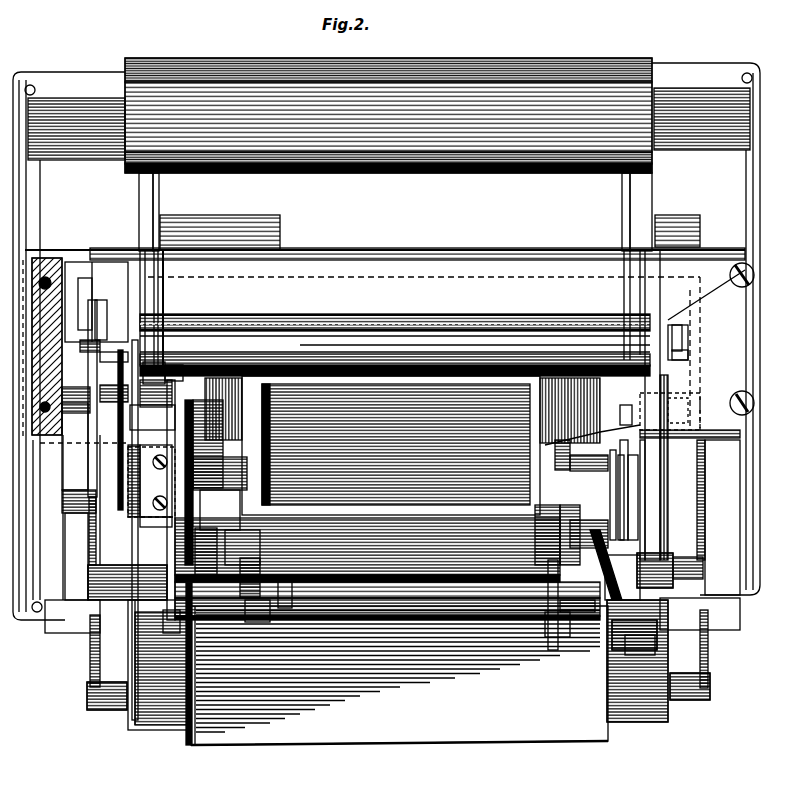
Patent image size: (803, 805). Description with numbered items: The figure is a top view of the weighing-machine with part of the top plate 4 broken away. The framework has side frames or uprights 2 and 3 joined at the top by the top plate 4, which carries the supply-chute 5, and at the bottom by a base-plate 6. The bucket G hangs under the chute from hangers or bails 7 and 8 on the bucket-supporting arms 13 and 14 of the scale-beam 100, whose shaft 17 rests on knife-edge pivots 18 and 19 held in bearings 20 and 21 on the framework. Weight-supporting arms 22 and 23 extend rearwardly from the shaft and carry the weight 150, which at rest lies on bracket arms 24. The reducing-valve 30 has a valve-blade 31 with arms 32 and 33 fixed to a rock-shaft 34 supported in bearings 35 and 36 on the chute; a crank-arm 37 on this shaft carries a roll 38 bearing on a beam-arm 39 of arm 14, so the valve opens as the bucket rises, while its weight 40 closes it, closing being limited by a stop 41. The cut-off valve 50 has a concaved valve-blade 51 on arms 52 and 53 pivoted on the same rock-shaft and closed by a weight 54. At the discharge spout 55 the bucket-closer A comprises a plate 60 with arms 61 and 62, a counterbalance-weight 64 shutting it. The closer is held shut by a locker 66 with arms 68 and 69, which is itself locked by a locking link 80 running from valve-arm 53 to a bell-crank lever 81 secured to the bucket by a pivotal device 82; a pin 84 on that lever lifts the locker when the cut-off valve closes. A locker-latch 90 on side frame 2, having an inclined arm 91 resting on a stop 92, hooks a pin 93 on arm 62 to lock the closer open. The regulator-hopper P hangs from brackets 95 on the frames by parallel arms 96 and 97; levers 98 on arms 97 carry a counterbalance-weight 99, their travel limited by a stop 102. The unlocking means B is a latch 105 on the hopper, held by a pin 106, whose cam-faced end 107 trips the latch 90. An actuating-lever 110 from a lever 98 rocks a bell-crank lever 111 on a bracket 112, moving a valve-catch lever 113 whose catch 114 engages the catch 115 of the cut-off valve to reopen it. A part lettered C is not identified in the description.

The side frame 2 is at (52, 440).
The side frame 3 is at (762, 447).
The top plate 4 is at (488, 256).
The supply-chute 5 is at (500, 366).
The base-plate 6 is at (705, 74).
The hanger 7 is at (625, 566).
The hanger 8 is at (152, 614).
The bucket-supporting arm 13 is at (652, 518).
The bucket-supporting arm 14 is at (132, 536).
The shaft 17 is at (521, 314).
The pivot 18 is at (104, 318).
The pivot 19 is at (676, 344).
The bearing 20 is at (112, 360).
The bearing 21 is at (682, 356).
The weight-supporting arm 22 is at (153, 204).
The weight-supporting arm 23 is at (655, 212).
The bracket arm 24 is at (172, 234).
The reducing-valve 30 is at (496, 652).
The valve-blade 31 is at (455, 632).
The valve-arm 32 is at (242, 690).
The valve-arm 33 is at (558, 630).
The rock-shaft 34 is at (415, 568).
The bearing 35 is at (548, 620).
The bearing 36 is at (266, 604).
The crank-arm 37 is at (163, 625).
The roll 38 is at (100, 690).
The beam-arm 39 is at (178, 712).
The weight 40 is at (396, 650).
The stop 41 is at (286, 602).
The cut-off valve 50 is at (560, 380).
The concaved valve-blade 51 is at (512, 508).
The arm 52 is at (262, 542).
The arm 53 is at (590, 445).
The weight 54 is at (522, 512).
The discharge opening 55 is at (232, 378).
The closer plate 60 is at (190, 550).
The arm 61 is at (620, 557).
The arm 62 is at (190, 538).
The weight 64 is at (196, 380).
The locker 66 is at (640, 505).
The arm 68 is at (632, 490).
The arm 69 is at (616, 480).
The locking link 80 is at (609, 565).
The bell-crank lever 81 is at (610, 652).
The pivotal device 82 is at (645, 640).
The pin 84 is at (640, 480).
The locker-latch 90 is at (135, 462).
The inclined faced arm 91 is at (172, 366).
The stop 92 is at (154, 364).
The pin 93 is at (140, 527).
The bracket 95 is at (55, 598).
The arm 96 is at (90, 660).
The arm 97 is at (90, 540).
The lever 98 is at (88, 344).
The counterbalance-weight 99 is at (90, 288).
The scale-beam 100 is at (632, 290).
The stop 102 is at (113, 395).
The unlocking-latch 105 is at (138, 450).
The pin 106 is at (136, 480).
The cam-faced end 107 is at (136, 497).
The actuating-lever 110 is at (690, 400).
The rocking lever 111 is at (645, 396).
The bracket 112 is at (695, 432).
The valve-catch lever 113 is at (540, 600).
The catch 114 is at (478, 600).
The catch 115 is at (520, 542).
The weight 150 is at (508, 152).
The bucket-closer A is at (230, 527).
The unlocking means B is at (152, 405).
The part C is at (645, 647).
The load receiver G is at (520, 738).
The hopper P is at (159, 677).